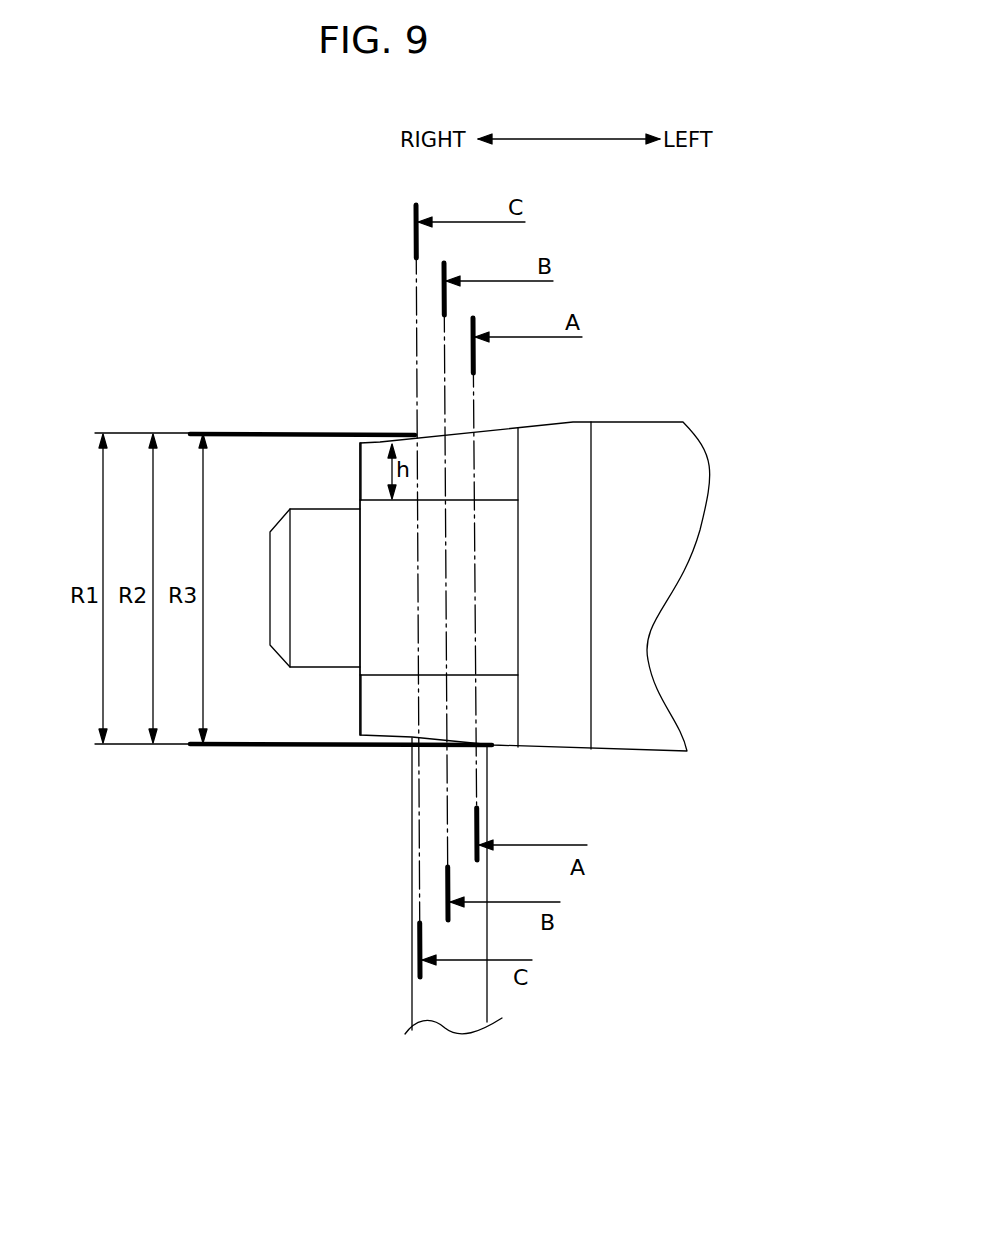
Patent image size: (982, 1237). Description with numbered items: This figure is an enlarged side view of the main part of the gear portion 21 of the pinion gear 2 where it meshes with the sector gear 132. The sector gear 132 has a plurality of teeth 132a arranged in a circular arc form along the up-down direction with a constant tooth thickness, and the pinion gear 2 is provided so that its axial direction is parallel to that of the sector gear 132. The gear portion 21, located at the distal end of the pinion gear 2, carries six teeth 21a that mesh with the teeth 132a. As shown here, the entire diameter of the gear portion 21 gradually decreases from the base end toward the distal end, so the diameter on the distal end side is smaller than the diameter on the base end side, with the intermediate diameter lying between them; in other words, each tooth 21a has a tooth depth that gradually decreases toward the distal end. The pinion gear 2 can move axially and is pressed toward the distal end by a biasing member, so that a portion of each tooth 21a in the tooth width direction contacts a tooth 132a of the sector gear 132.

The pinion gear 2 is at (697, 408).
The gear portion 21 is at (405, 420).
The teeth 21a is at (372, 461).
The sector gear 132 is at (412, 868).
The teeth 132a is at (494, 749).